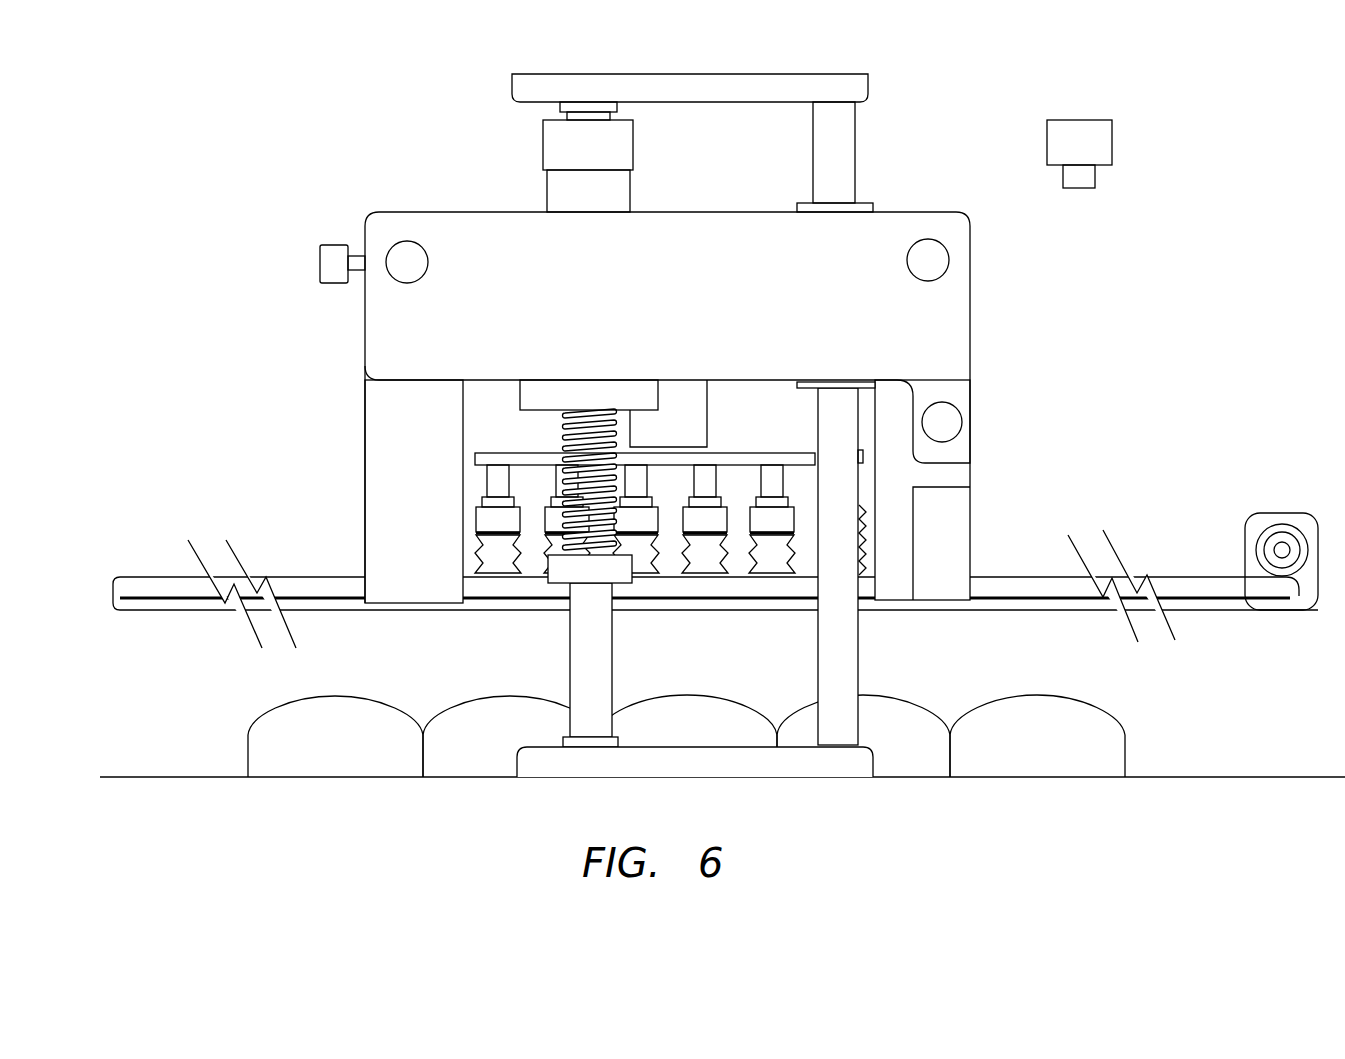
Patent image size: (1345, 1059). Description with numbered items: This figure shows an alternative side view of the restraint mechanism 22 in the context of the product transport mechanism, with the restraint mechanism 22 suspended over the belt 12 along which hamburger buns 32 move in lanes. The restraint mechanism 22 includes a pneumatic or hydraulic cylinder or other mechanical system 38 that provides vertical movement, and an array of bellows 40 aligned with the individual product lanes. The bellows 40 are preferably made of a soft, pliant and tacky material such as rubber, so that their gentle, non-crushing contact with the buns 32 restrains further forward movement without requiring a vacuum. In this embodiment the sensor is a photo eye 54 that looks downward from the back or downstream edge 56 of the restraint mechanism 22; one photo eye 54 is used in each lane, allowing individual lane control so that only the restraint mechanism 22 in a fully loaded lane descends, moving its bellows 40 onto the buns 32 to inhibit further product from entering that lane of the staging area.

The belt 12 is at (1190, 583).
The restraint mechanism 22 is at (655, 425).
The hamburger buns 32 is at (275, 733).
The pneumatic or hydraulic cylinder 38 is at (680, 405).
The bellows 40 is at (763, 572).
The photo eye 54 is at (1100, 143).
The downstream edge 56 is at (970, 293).